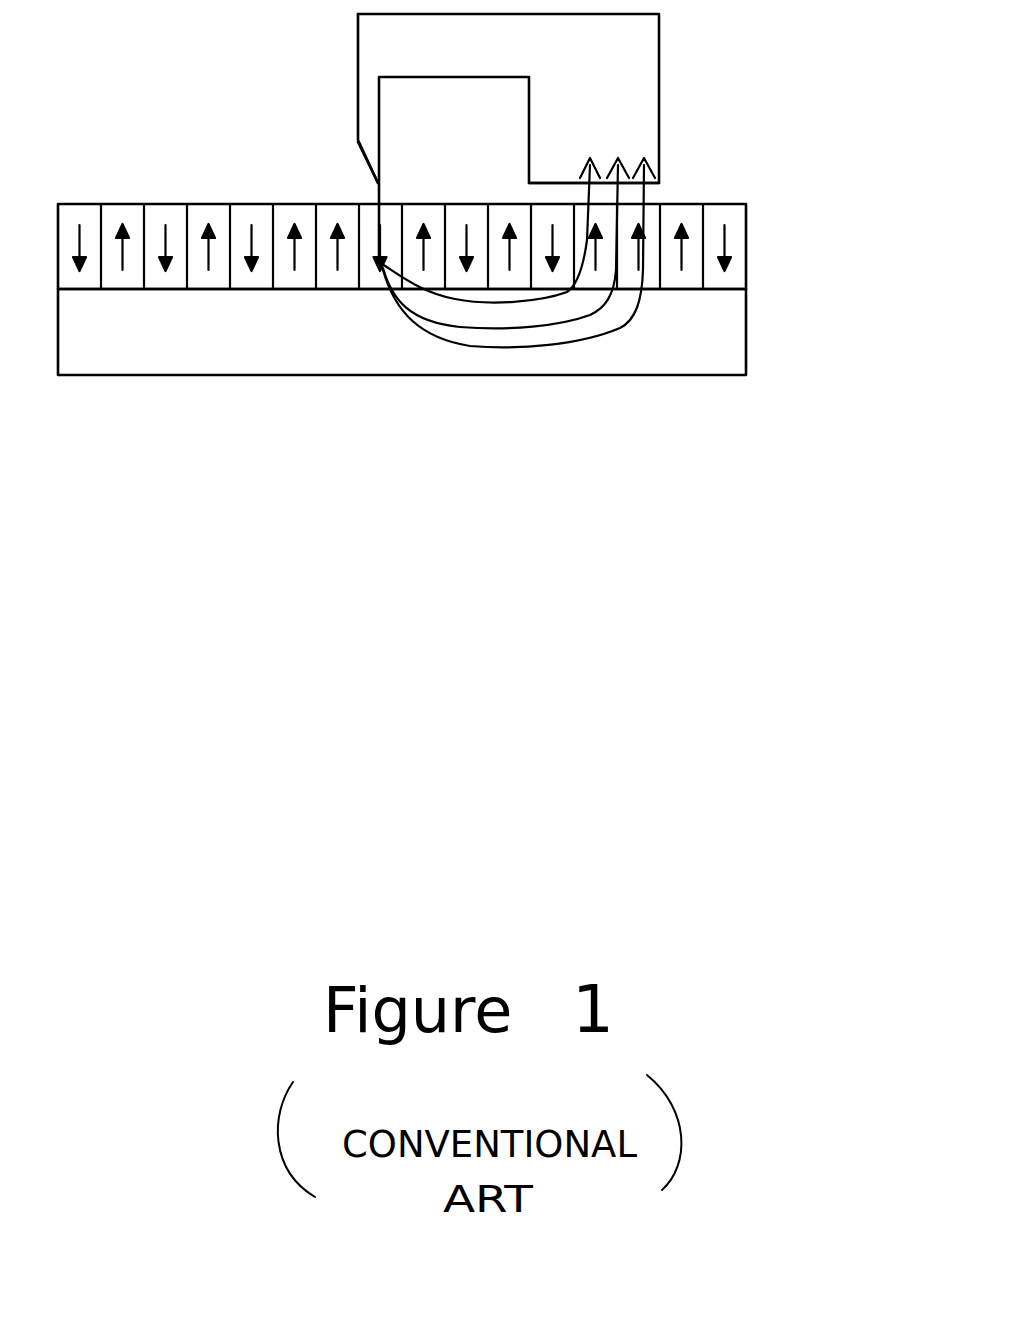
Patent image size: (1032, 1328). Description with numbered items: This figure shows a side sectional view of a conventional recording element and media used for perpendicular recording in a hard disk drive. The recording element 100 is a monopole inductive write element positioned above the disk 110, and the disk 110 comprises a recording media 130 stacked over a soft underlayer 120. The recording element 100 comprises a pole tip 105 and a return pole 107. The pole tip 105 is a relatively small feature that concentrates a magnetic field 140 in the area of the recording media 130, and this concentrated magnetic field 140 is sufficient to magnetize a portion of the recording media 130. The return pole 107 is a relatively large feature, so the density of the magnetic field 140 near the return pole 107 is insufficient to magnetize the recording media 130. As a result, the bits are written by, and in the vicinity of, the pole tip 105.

The recording element 100 is at (628, 80).
The pole tip 105 is at (368, 183).
The return pole 107 is at (668, 170).
The disk 110 is at (471, 250).
The soft underlayer 120 is at (190, 355).
The recording media 130 is at (120, 200).
The magnetic field 140 is at (498, 352).